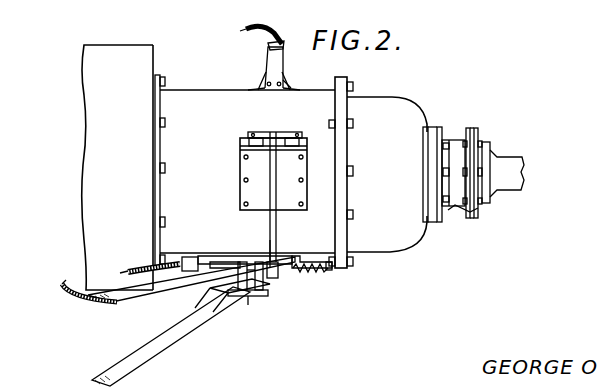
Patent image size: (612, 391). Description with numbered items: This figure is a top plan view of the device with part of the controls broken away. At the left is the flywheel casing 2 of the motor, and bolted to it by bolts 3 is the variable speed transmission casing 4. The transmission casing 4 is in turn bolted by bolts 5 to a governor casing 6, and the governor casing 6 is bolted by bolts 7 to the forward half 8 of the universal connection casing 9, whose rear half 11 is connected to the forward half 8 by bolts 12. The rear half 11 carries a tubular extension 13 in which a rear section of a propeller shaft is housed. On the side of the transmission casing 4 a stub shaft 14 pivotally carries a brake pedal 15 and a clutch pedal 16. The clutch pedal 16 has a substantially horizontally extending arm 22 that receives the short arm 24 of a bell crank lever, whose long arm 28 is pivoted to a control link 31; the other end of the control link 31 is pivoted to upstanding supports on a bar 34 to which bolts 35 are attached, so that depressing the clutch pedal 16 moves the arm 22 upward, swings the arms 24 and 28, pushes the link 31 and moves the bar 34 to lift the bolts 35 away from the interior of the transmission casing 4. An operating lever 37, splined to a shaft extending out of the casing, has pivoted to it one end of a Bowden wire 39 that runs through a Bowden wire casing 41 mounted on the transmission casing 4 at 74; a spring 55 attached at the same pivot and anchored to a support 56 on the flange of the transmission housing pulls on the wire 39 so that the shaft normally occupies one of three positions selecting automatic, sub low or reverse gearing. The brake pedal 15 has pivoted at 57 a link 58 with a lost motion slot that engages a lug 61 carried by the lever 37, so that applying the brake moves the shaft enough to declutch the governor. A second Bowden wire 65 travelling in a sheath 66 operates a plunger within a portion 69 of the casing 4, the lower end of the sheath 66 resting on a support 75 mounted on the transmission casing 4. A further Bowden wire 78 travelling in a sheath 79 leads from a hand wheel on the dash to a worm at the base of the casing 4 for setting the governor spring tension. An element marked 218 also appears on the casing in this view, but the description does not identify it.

The flywheel casing 2 is at (118, 52).
The bolts 3 is at (165, 88).
The variable speed transmission casing 4 is at (214, 92).
The bolts 5 is at (353, 86).
The governor casing 6 is at (410, 110).
The bolts 7 is at (448, 136).
The forward half of universal connection casing 8 is at (452, 206).
The universal connection casing 9 is at (476, 130).
The rear half of universal connection casing 11 is at (488, 140).
The bolts 12 is at (474, 210).
The tubular extension 13 is at (515, 165).
The stub shaft 14 is at (236, 298).
The brake pedal 15 is at (140, 300).
The clutch pedal 16 is at (166, 340).
The horizontally extending arm 22 is at (265, 296).
The short arm 24 is at (252, 300).
The long arm 28 is at (277, 278).
The control link 31 is at (283, 184).
The bar 34 is at (266, 132).
The bolts 35 is at (249, 143).
The operating lever 37 is at (304, 258).
The Bowden wire 39 is at (128, 271).
The Bowden wire casing 41 is at (142, 266).
The spring 55 is at (310, 272).
The support 56 is at (331, 270).
The pivot 57 is at (226, 260).
The link 58 is at (246, 258).
The lug 61 is at (278, 256).
The Bowden wire 65 is at (243, 29).
The sheath 66 is at (275, 32).
The portion of casing 69 is at (290, 76).
The mounting 74 is at (191, 257).
The support 75 is at (280, 60).
The Bowden wire 78 is at (64, 283).
The sheath 79 is at (82, 298).
The mounting plate 218 is at (242, 176).